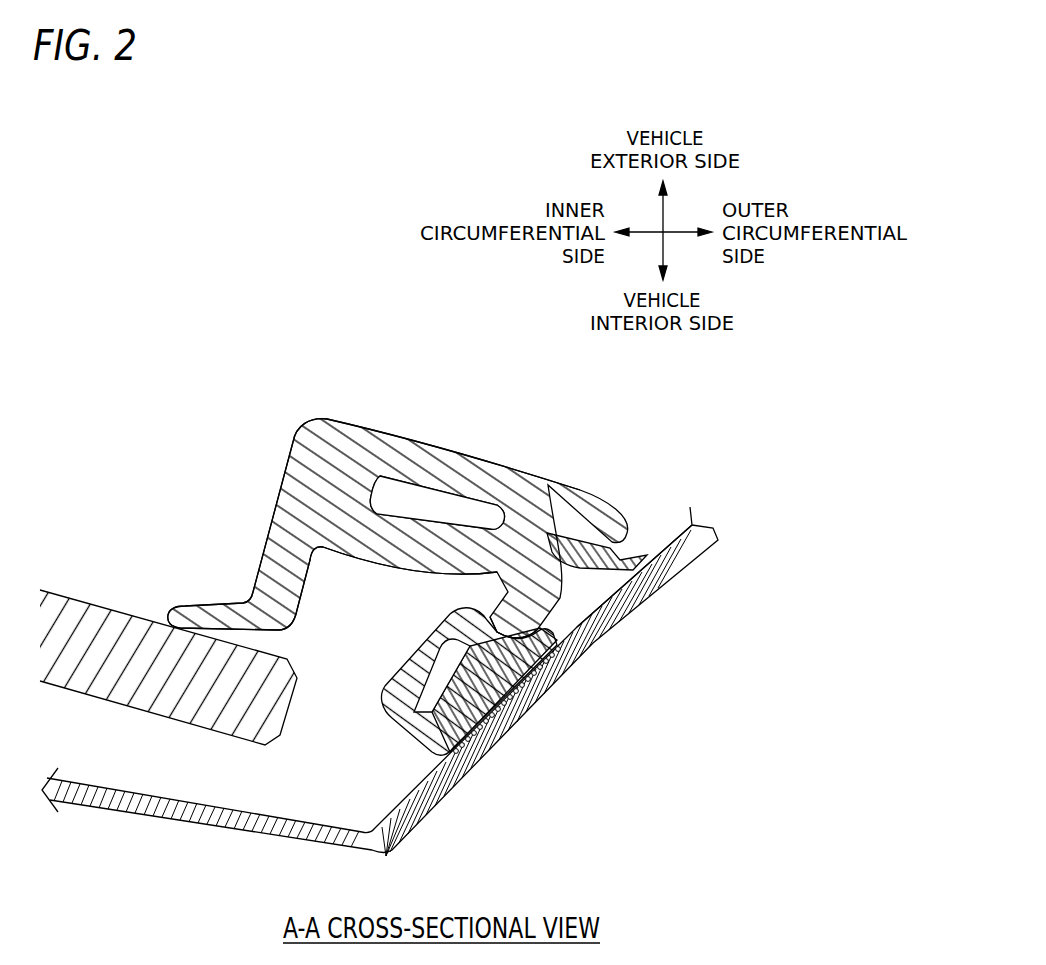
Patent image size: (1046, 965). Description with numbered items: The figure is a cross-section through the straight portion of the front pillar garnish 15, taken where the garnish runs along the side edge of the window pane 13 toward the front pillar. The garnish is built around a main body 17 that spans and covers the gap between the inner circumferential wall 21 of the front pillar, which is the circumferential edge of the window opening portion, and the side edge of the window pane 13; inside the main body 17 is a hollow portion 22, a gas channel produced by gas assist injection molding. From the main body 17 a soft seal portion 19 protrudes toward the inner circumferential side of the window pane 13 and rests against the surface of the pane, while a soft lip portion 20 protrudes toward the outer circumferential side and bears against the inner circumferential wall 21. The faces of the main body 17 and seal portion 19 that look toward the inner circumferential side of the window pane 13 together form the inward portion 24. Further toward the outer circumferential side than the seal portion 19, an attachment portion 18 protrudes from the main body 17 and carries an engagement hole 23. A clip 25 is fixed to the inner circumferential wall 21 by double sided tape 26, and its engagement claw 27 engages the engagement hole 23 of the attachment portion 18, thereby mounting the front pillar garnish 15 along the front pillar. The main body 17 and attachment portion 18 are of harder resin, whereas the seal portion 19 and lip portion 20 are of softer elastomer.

The window pane 13 is at (105, 600).
The front pillar garnish 15 is at (455, 450).
The main body 17 is at (362, 443).
The attachment portion 18 is at (490, 742).
The seal portion 19 is at (198, 603).
The lip portion 20 is at (645, 550).
The inner circumferential wall 21 is at (601, 608).
The hollow portion 22 is at (423, 498).
The engagement hole 23 is at (503, 643).
The inward portion 24 is at (272, 505).
The clip 25 is at (395, 722).
The double sided tape 26 is at (510, 698).
The engagement claw 27 is at (518, 680).